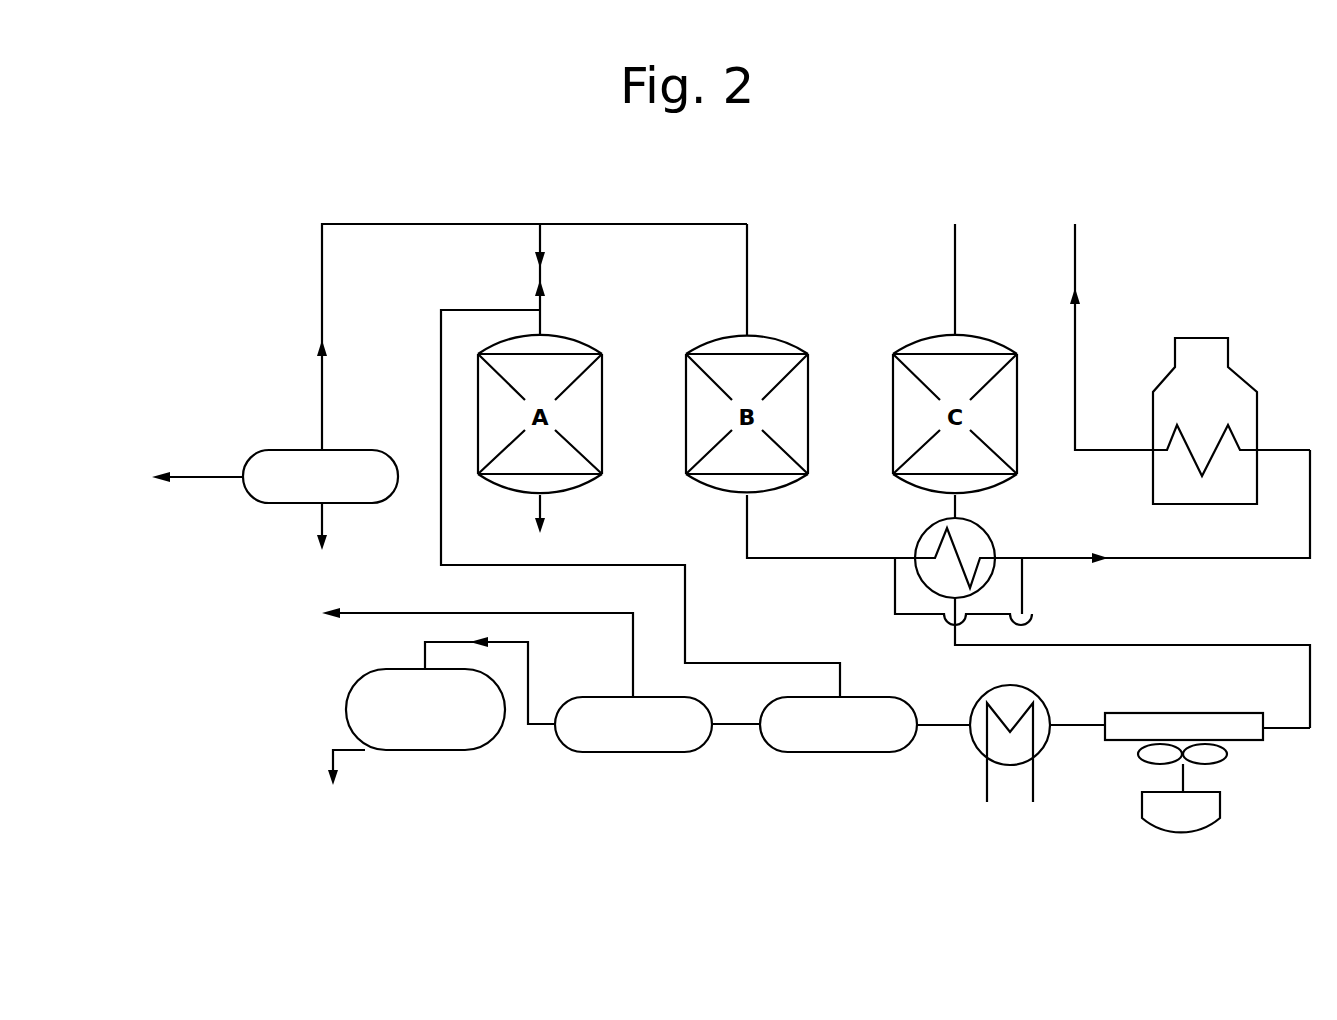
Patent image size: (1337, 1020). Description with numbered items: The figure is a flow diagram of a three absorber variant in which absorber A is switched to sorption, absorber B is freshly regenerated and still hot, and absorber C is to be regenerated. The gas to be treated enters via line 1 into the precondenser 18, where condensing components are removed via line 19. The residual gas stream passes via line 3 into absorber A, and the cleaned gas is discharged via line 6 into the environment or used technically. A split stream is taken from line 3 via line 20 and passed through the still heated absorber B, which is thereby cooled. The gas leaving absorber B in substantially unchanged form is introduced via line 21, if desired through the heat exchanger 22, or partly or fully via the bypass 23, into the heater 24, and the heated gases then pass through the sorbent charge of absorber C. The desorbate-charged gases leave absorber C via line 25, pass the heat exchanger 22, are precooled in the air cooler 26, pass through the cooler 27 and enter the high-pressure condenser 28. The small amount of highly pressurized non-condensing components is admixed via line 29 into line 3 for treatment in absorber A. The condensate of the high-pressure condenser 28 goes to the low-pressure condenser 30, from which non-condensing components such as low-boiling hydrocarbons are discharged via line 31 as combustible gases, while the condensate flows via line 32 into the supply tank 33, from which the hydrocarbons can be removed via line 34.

The line 1 is at (200, 477).
The line 3 is at (397, 224).
The line 6 is at (540, 520).
The precondenser 18 is at (378, 450).
The line 19 is at (322, 530).
The line 20 is at (668, 224).
The line 21 is at (765, 520).
The heat exchanger 22 is at (990, 537).
The bypass 23 is at (1032, 614).
The heater 24 is at (1250, 392).
The line 25 is at (950, 510).
The air cooler 26 is at (1225, 740).
The cooler 27 is at (988, 760).
The high-pressure condenser 28 is at (838, 752).
The line 29 is at (441, 542).
The low-pressure condenser 30 is at (632, 752).
The line 31 is at (590, 613).
The line 32 is at (528, 724).
The supply tank 33 is at (425, 742).
The line 34 is at (333, 752).